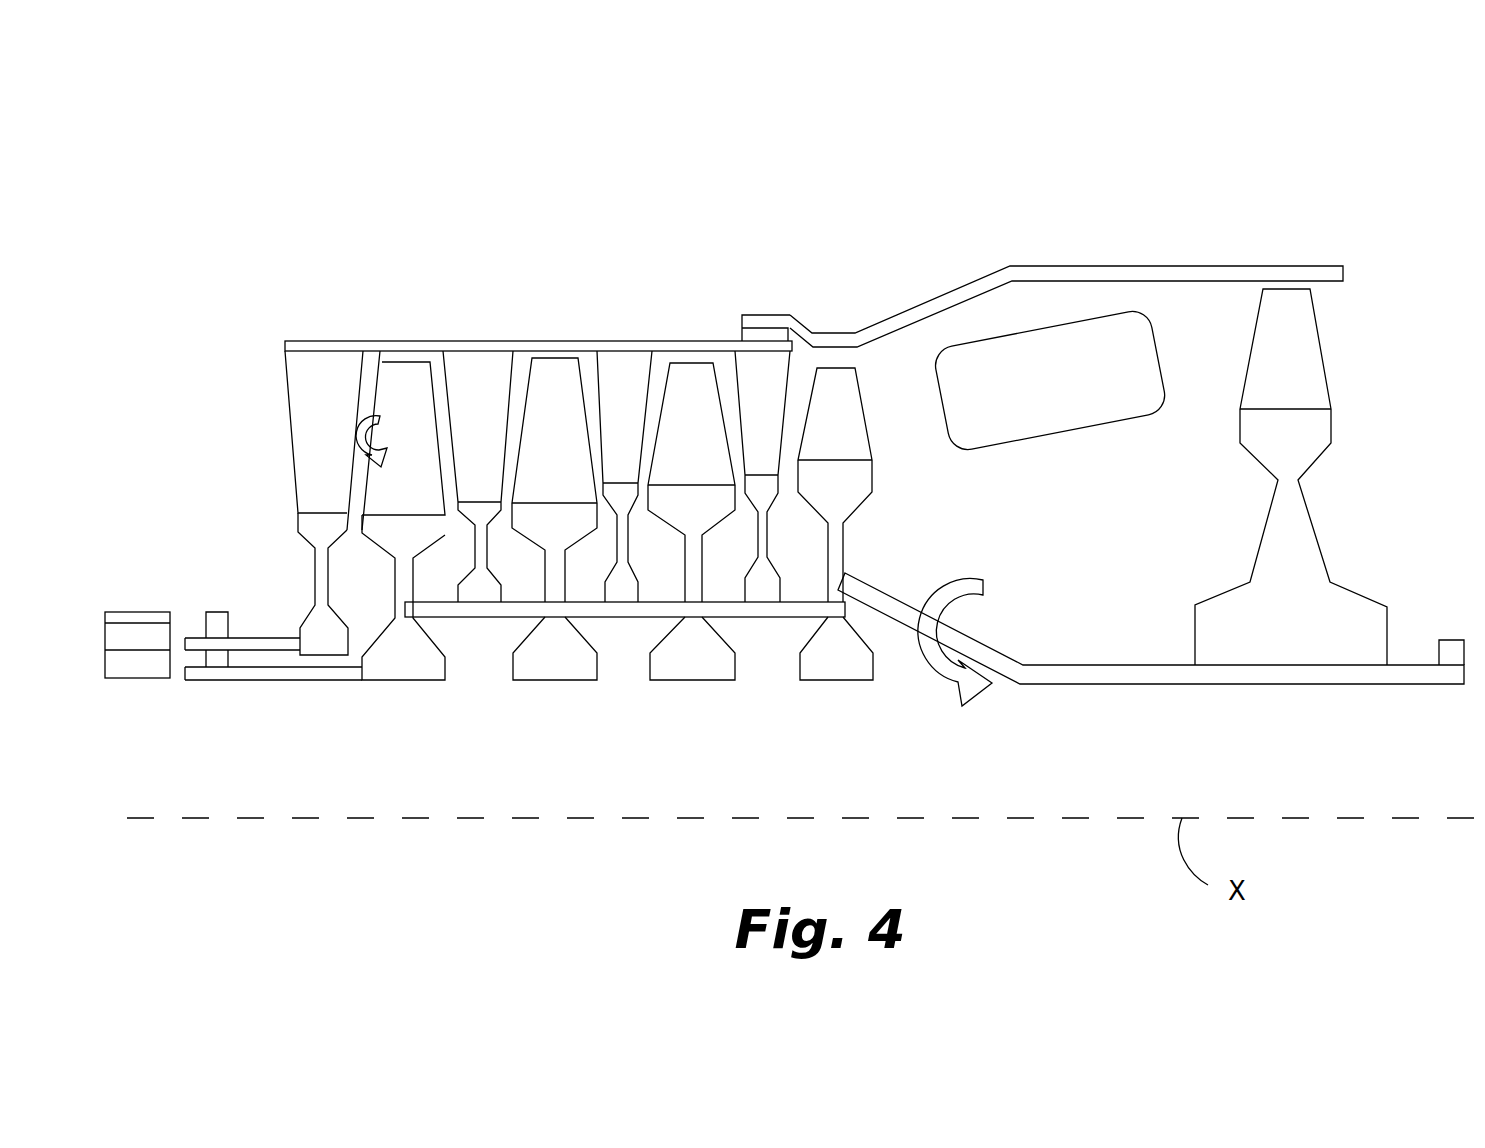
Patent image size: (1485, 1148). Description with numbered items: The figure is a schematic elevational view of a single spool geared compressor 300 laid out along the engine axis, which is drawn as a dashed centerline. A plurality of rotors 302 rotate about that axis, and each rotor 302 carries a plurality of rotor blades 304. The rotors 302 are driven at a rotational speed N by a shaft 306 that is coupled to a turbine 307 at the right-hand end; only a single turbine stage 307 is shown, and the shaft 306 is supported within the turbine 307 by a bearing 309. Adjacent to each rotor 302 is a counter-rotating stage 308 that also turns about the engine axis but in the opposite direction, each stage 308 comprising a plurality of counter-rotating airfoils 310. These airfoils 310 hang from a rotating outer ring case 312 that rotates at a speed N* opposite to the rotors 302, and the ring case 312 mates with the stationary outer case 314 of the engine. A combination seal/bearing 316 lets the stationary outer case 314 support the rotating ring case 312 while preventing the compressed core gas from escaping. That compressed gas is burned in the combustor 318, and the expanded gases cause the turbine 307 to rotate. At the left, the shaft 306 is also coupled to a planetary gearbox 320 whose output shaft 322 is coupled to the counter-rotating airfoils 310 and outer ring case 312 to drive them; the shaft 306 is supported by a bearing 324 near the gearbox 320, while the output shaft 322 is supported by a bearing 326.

The single spool geared compressor 300 is at (1142, 70).
The rotor 302 is at (800, 667).
The rotor blade 304 is at (405, 393).
The shaft 306 is at (990, 645).
The turbine 307 is at (1300, 440).
The counter-rotating stage 308 is at (297, 538).
The bearing 309 is at (1447, 633).
The counter-rotating airfoil 310 is at (282, 363).
The rotating outer ring case 312 is at (597, 338).
The stationary outer case 314 is at (975, 273).
The combination seal/bearing 316 is at (745, 320).
The combustor 318 is at (1112, 372).
The planetary gearbox 320 is at (146, 688).
The output shaft 322 is at (264, 638).
The bearing 324 is at (215, 660).
The bearing 326 is at (208, 590).